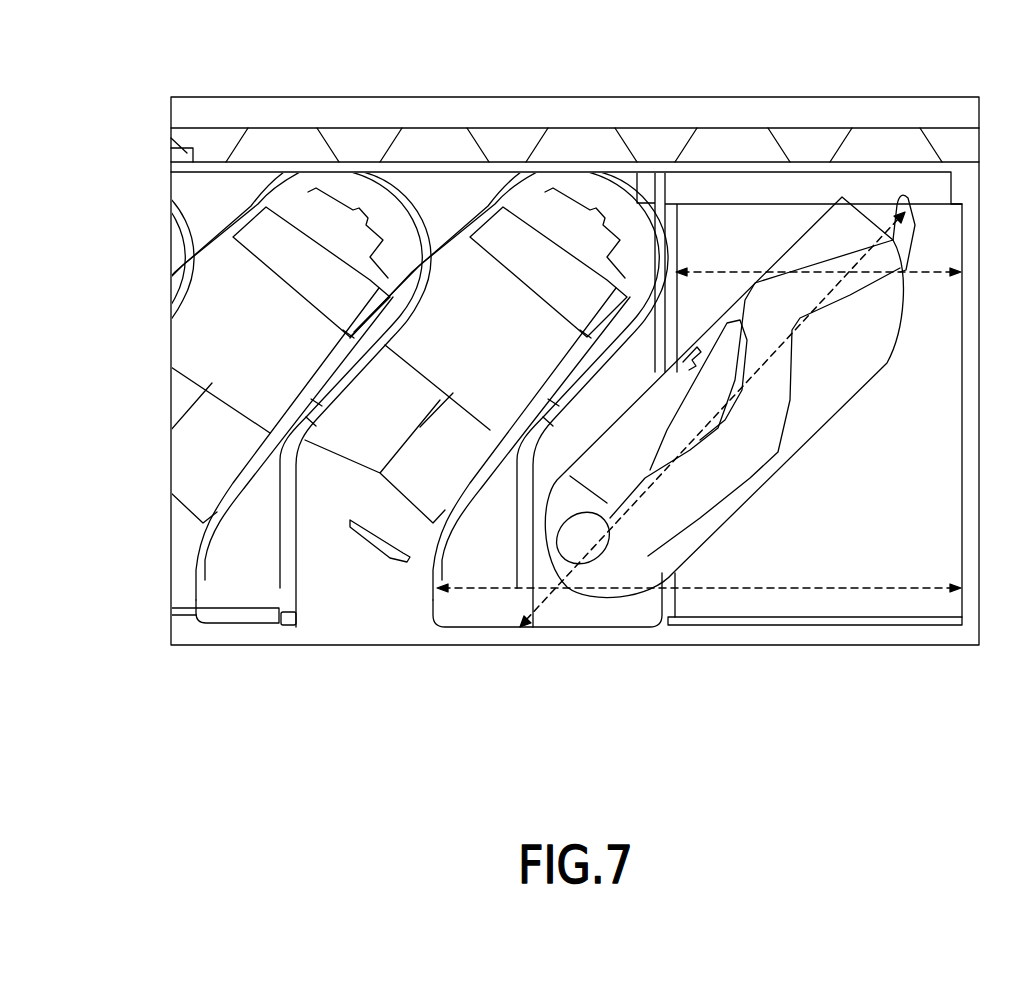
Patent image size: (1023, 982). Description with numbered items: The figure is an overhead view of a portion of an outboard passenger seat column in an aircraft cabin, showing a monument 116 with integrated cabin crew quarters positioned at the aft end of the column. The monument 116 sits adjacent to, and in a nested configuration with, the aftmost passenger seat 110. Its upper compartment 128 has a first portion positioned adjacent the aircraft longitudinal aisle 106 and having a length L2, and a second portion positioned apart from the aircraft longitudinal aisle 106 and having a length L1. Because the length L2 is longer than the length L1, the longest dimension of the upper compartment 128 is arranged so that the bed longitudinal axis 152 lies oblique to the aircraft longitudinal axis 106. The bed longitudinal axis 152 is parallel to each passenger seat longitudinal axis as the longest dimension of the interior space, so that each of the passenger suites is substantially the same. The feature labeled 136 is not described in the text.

The aircraft longitudinal aisle 106 is at (346, 648).
The aftmost passenger seat 110 is at (555, 262).
The monument 116 is at (748, 623).
The upper compartment 128 is at (708, 190).
The sleeping compartment 136 is at (827, 232).
The bed longitudinal axis 152 is at (903, 212).
The length of second portion L1 is at (727, 272).
The length of first portion L2 is at (870, 590).